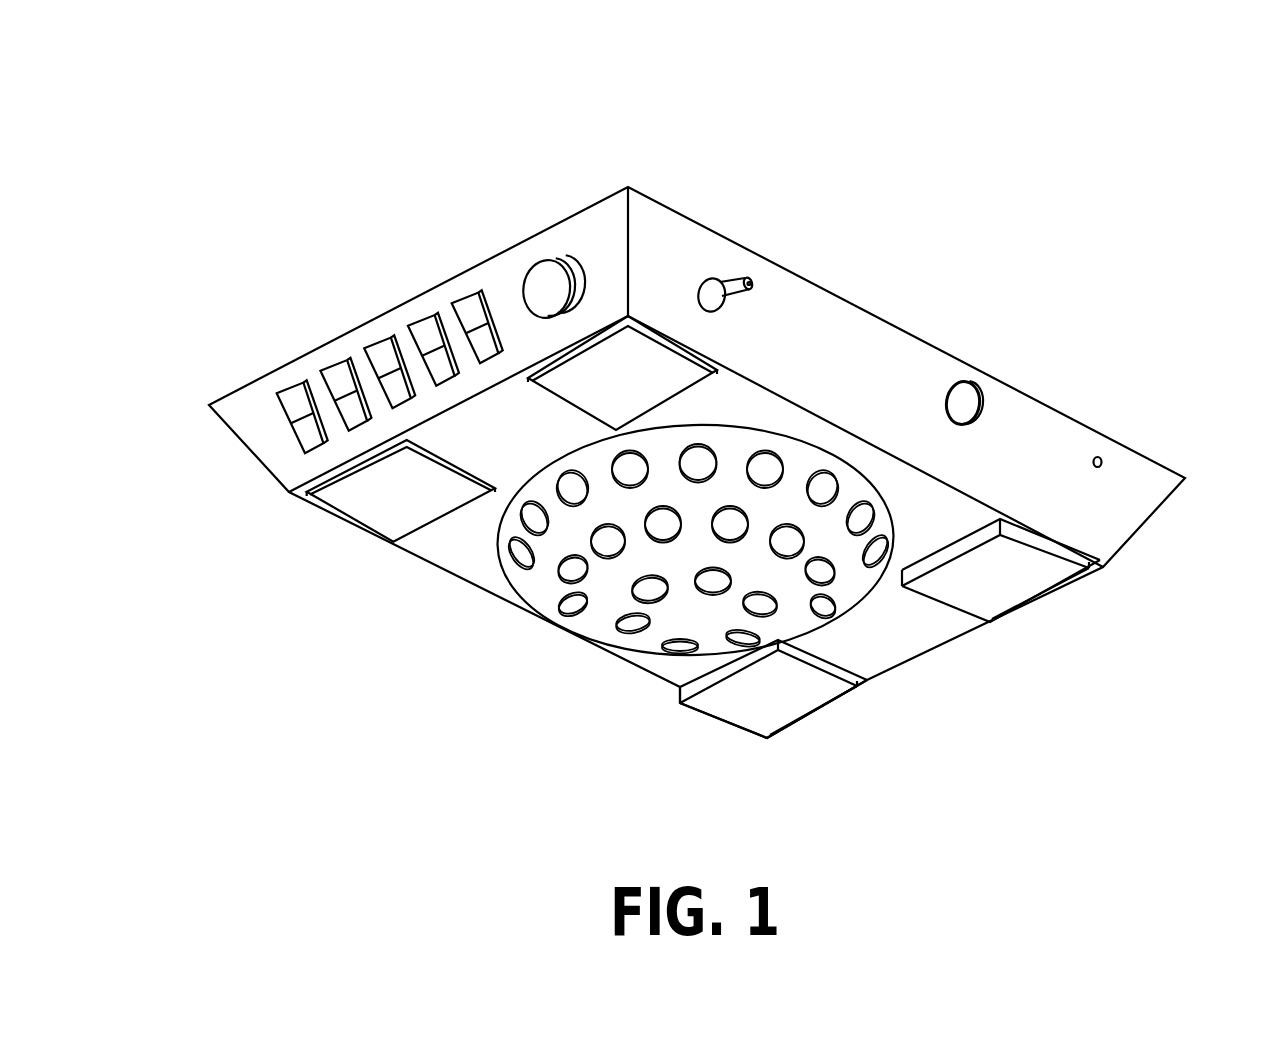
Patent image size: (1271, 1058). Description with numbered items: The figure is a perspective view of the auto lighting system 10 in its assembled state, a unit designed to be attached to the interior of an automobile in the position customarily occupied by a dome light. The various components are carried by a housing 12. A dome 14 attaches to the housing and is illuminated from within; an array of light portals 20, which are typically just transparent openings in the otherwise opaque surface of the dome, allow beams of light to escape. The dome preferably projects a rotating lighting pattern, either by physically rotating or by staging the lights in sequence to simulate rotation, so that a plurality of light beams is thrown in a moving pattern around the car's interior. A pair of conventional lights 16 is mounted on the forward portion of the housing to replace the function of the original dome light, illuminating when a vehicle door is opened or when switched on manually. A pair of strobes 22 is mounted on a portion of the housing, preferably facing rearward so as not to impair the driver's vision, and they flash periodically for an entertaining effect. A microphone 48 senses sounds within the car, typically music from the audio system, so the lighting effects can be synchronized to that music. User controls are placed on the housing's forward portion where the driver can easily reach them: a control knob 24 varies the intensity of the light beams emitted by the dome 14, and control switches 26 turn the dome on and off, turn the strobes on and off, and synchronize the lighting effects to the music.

The auto lighting system 10 is at (417, 682).
The housing 12 is at (696, 377).
The dome 14 is at (852, 563).
The conventional lights 16 is at (498, 380).
The light portals 20 is at (826, 490).
The strobes 22 is at (767, 688).
The control knob 24 is at (494, 214).
The control switches 26 is at (466, 312).
The microphone 48 is at (1019, 347).